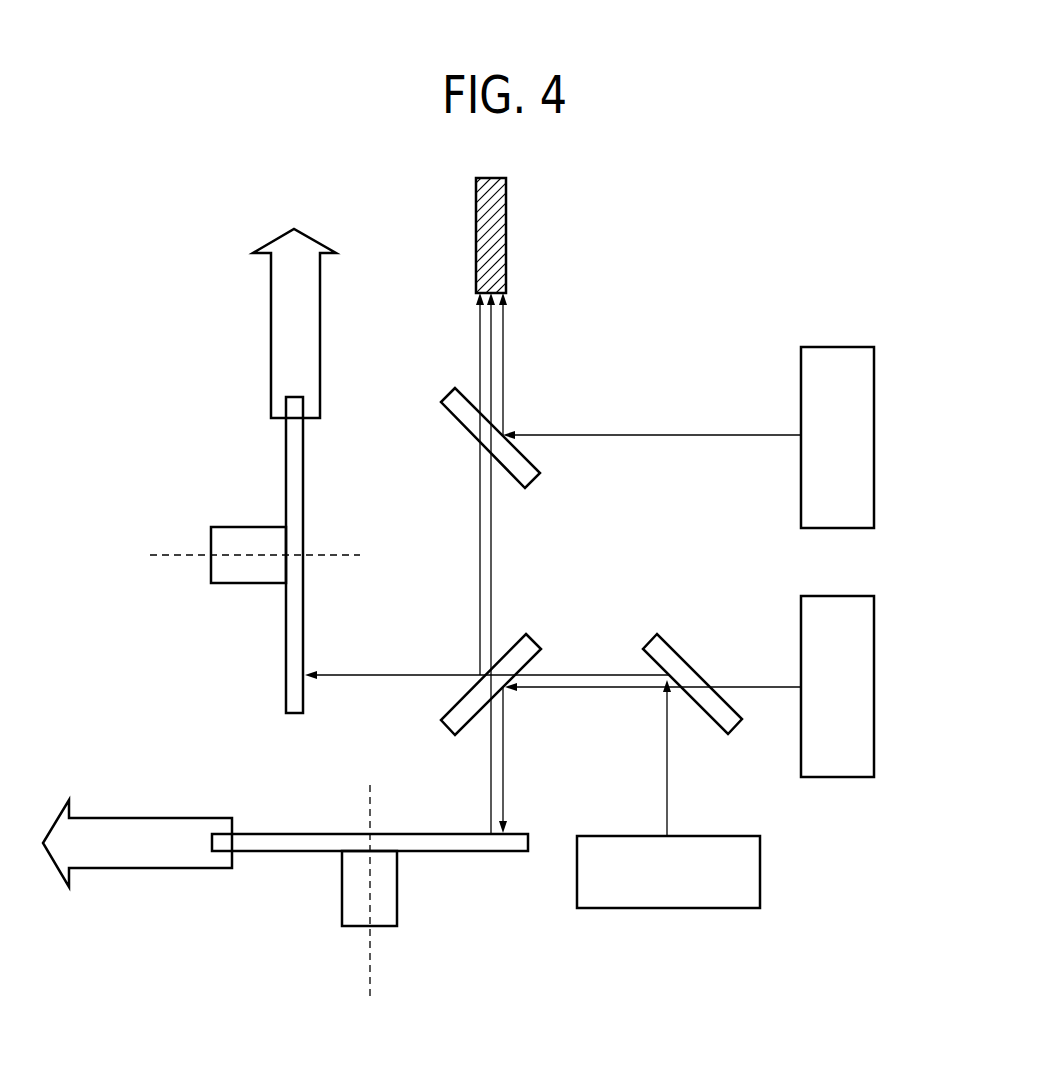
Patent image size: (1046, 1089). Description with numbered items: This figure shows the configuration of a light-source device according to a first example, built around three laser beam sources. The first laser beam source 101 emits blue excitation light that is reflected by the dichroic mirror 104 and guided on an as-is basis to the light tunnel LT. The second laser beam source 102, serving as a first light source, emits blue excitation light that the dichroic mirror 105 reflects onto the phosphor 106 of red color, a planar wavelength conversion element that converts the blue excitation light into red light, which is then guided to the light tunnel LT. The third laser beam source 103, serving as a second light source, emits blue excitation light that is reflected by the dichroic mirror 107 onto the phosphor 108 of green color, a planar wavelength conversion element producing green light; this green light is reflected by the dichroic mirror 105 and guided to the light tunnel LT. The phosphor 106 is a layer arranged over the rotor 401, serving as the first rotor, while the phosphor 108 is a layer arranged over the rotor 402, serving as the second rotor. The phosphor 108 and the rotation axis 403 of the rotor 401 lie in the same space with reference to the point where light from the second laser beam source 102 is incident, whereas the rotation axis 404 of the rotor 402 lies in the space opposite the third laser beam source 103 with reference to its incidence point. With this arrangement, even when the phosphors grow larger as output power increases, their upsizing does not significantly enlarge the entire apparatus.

The first laser beam source 101 is at (876, 433).
The second laser beam source 102 is at (876, 676).
The third laser beam source 103 is at (668, 910).
The dichroic mirror 104 is at (450, 397).
The dichroic mirror 105 is at (527, 647).
The phosphor of red color 106 is at (475, 862).
The dichroic mirror 107 is at (674, 660).
The phosphor of green color 108 is at (286, 471).
The rotor 401 is at (342, 888).
The rotor 402 is at (233, 585).
The rotation axis 403 is at (367, 962).
The rotation axis 404 is at (163, 553).
The light tunnel LT is at (507, 228).